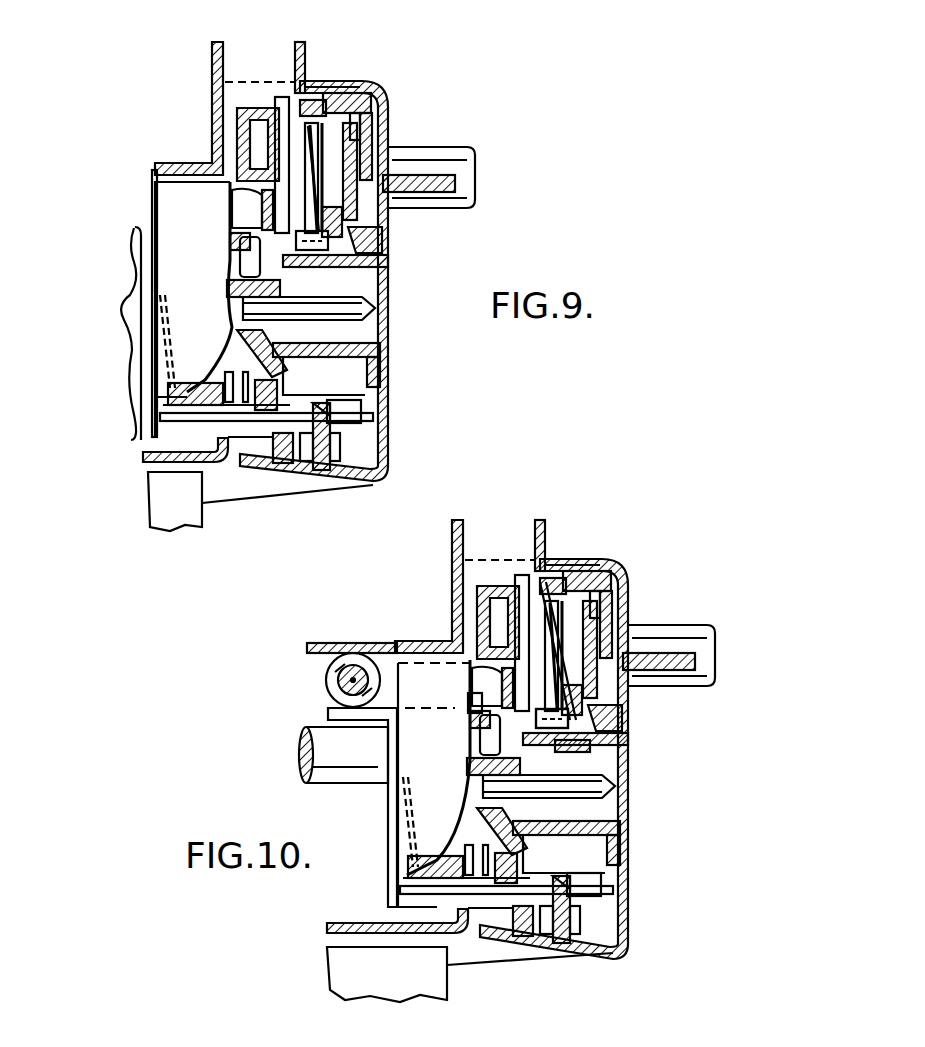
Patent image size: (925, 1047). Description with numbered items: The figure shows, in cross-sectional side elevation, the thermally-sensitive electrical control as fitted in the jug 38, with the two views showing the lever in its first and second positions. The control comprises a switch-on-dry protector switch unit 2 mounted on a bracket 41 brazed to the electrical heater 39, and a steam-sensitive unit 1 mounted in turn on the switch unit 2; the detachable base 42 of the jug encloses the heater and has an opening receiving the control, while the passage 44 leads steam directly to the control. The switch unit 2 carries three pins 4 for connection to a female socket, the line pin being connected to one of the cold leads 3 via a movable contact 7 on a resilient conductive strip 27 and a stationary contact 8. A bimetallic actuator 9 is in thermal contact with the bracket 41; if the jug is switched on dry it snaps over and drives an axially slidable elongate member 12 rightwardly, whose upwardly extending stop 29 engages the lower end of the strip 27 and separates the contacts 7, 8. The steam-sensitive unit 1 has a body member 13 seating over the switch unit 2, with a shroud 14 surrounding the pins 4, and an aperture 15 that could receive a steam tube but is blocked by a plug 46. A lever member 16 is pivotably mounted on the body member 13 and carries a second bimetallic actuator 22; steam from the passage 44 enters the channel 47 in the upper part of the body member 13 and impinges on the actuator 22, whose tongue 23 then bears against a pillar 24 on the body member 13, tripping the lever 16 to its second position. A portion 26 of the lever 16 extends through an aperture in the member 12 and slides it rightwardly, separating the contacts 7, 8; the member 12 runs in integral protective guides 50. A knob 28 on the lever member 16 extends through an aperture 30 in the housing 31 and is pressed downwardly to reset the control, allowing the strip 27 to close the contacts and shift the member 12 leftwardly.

In FIG. 9, the steam-sensitive unit 1 is at (340, 92).
In FIG. 10, the steam-sensitive unit 1 is at (557, 577).
In FIG. 9, the switch-on-dry protector switch unit 2 is at (170, 192).
In FIG. 10, the switch-on-dry protector switch unit 2 is at (404, 674).
In FIG. 9, the cold leads 3 is at (127, 333).
In FIG. 10, the cold leads 3 is at (350, 786).
In FIG. 9, the pins 4 is at (365, 308).
In FIG. 10, the pins 4 is at (600, 800).
In FIG. 9, the movable contact 7 is at (262, 372).
In FIG. 10, the movable contact 7 is at (478, 842).
In FIG. 9, the stationary contact 8 is at (245, 402).
In FIG. 10, the stationary contact 8 is at (470, 880).
In FIG. 9, the bimetallic actuator 9 is at (165, 372).
In FIG. 10, the bimetallic actuator 9 is at (413, 829).
In FIG. 9, the elongate member 12 is at (380, 352).
In FIG. 10, the elongate member 12 is at (545, 890).
In FIG. 9, the body member 13 is at (248, 112).
In FIG. 10, the body member 13 is at (453, 614).
In FIG. 9, the shroud 14 is at (357, 255).
In FIG. 10, the shroud 14 is at (597, 780).
In FIG. 10, the aperture 15 is at (470, 705).
In FIG. 9, the lever member 16 is at (372, 135).
In FIG. 10, the lever member 16 is at (612, 580).
In FIG. 9, the bimetallic actuator 22 is at (318, 186).
In FIG. 10, the bimetallic actuator 22 is at (597, 693).
In FIG. 10, the tongue 23 is at (592, 703).
In FIG. 10, the pillar 24 is at (560, 747).
In FIG. 9, the portion of the lever 26 is at (322, 445).
In FIG. 10, the portion of the lever 26 is at (590, 913).
In FIG. 9, the resilient conductive strip 27 is at (240, 363).
In FIG. 10, the resilient conductive strip 27 is at (470, 833).
In FIG. 9, the knob 28 is at (447, 178).
In FIG. 10, the knob 28 is at (673, 648).
In FIG. 9, the stop 29 is at (247, 420).
In FIG. 10, the stop 29 is at (483, 907).
In FIG. 9, the aperture 30 is at (388, 180).
In FIG. 10, the aperture 30 is at (648, 652).
In FIG. 9, the housing 31 is at (363, 98).
In FIG. 10, the housing 31 is at (608, 565).
In FIG. 9, the jug 38 is at (237, 43).
In FIG. 10, the jug 38 is at (457, 546).
In FIG. 10, the electrical heater 39 is at (300, 748).
In FIG. 9, the bracket 41 is at (152, 364).
In FIG. 10, the bracket 41 is at (388, 811).
In FIG. 9, the detachable base 42 is at (155, 503).
In FIG. 10, the detachable base 42 is at (345, 949).
In FIG. 9, the passage 44 is at (256, 62).
In FIG. 10, the passage 44 is at (490, 542).
In FIG. 9, the plug 46 is at (263, 200).
In FIG. 10, the plug 46 is at (467, 680).
In FIG. 9, the steam channel 47 is at (289, 113).
In FIG. 10, the steam channel 47 is at (528, 580).
In FIG. 9, the protective guides 50 is at (360, 408).
In FIG. 10, the protective guides 50 is at (620, 892).